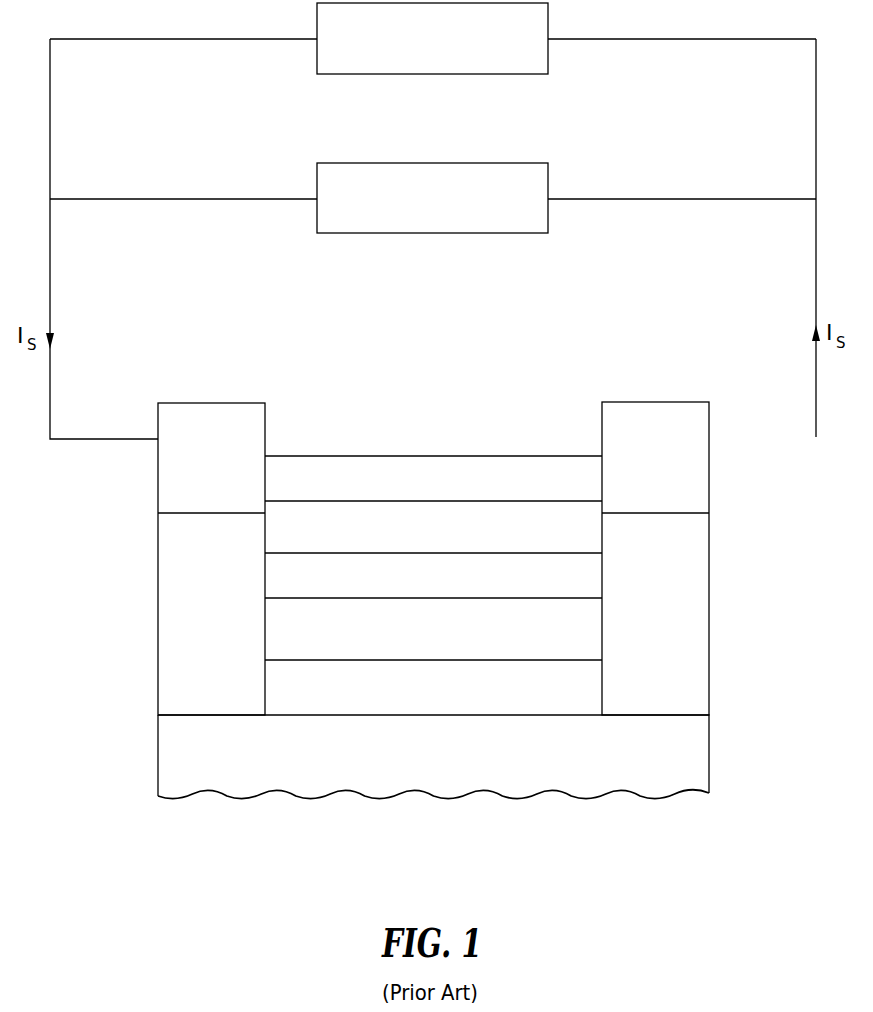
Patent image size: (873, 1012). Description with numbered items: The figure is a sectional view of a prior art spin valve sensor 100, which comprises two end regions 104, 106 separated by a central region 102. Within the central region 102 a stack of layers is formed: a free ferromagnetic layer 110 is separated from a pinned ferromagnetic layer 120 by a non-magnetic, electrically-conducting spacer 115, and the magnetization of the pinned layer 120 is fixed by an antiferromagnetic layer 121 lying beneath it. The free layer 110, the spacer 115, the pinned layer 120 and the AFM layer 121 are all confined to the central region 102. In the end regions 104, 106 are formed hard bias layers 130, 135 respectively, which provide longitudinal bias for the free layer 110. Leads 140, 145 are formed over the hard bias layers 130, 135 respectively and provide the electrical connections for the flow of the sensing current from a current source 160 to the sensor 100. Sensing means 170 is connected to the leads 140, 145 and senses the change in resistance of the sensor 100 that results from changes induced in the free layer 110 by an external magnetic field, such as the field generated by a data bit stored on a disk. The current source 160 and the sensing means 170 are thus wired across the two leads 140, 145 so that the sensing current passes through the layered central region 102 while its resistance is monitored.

The SV sensor 100 is at (645, 826).
The central region 102 is at (268, 393).
The end region 104 is at (158, 398).
The end region 106 is at (709, 398).
The free layer 110 is at (592, 535).
The spacer 115 is at (593, 582).
The pinned layer 120 is at (593, 645).
The antiferromagnetic (AFM) layer 121 is at (593, 690).
The hard bias layer 130 is at (158, 599).
The hard bias layer 135 is at (709, 600).
The lead 140 is at (164, 478).
The lead 145 is at (700, 475).
The current source 160 is at (530, 235).
The sensing means 170 is at (530, 76).